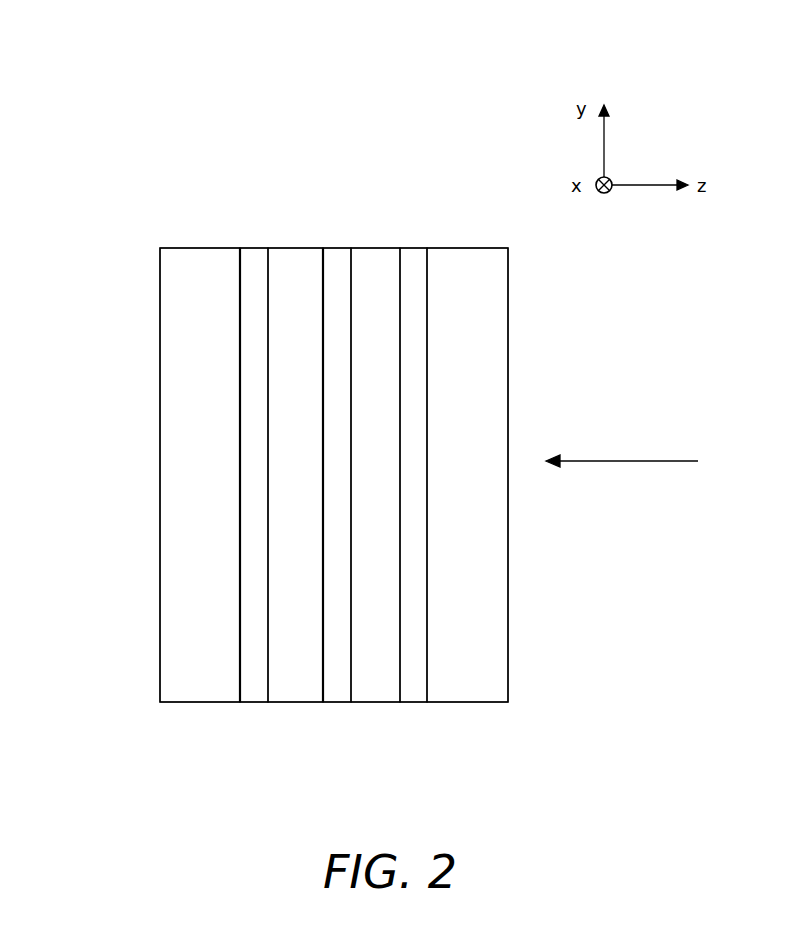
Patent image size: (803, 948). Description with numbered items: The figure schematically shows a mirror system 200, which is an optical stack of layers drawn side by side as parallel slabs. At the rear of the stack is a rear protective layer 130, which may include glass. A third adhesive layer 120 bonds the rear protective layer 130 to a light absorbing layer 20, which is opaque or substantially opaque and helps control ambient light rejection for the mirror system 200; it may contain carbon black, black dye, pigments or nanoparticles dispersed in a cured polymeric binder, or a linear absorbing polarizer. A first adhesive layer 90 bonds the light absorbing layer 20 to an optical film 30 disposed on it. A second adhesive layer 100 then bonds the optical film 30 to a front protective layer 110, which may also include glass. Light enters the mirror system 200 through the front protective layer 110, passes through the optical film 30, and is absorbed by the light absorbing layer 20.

The mirror system 200 is at (187, 92).
The rear protective layer 130 is at (207, 268).
The third adhesive layer 120 is at (255, 687).
The light absorbing layer 20 is at (297, 268).
The first adhesive layer 90 is at (338, 687).
The optical film 30 is at (380, 268).
The second adhesive layer 100 is at (412, 687).
The front protective layer 110 is at (463, 267).